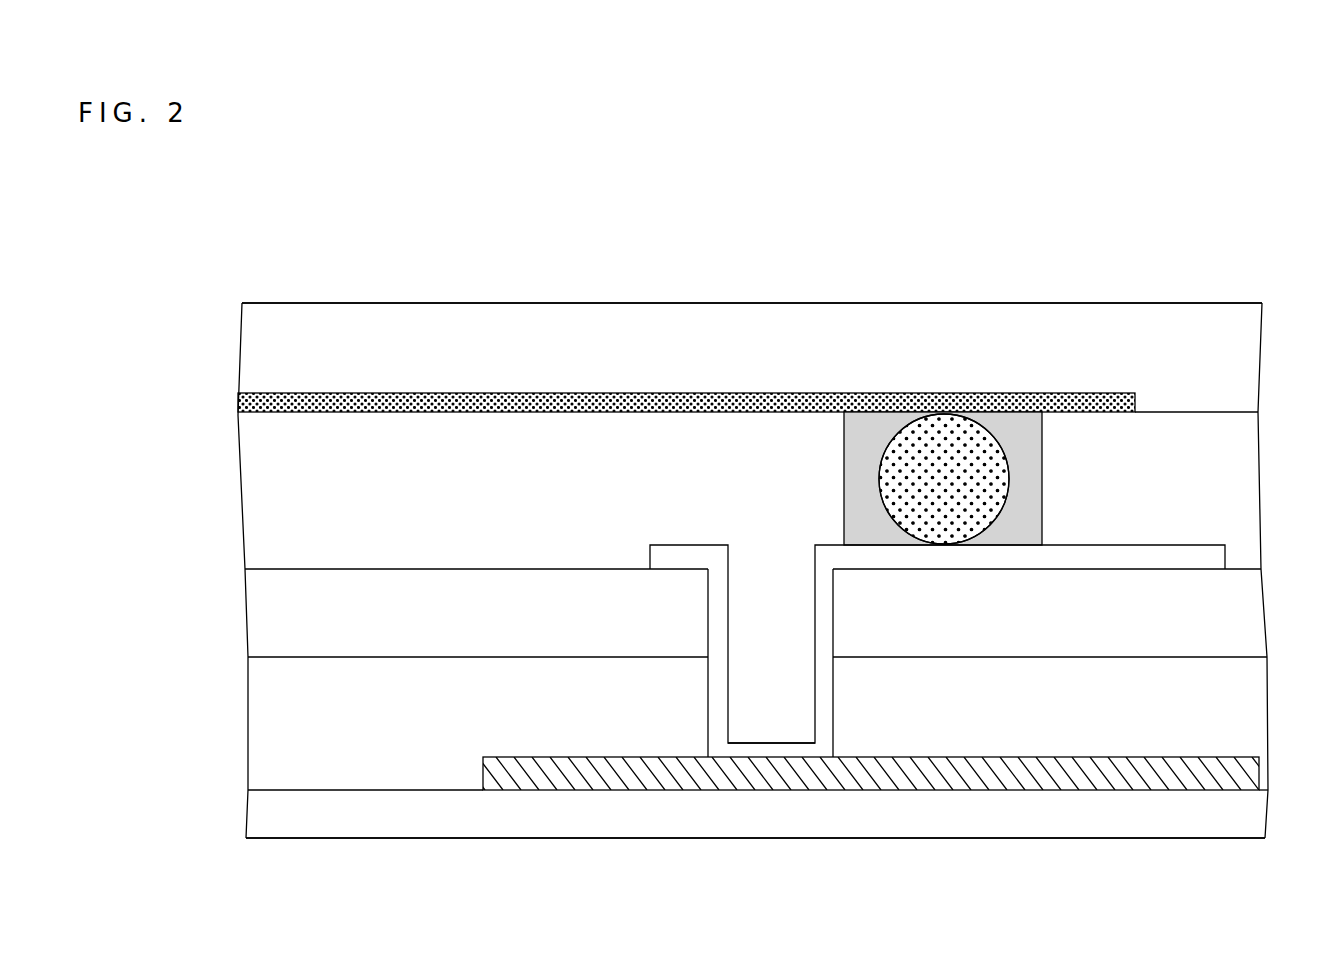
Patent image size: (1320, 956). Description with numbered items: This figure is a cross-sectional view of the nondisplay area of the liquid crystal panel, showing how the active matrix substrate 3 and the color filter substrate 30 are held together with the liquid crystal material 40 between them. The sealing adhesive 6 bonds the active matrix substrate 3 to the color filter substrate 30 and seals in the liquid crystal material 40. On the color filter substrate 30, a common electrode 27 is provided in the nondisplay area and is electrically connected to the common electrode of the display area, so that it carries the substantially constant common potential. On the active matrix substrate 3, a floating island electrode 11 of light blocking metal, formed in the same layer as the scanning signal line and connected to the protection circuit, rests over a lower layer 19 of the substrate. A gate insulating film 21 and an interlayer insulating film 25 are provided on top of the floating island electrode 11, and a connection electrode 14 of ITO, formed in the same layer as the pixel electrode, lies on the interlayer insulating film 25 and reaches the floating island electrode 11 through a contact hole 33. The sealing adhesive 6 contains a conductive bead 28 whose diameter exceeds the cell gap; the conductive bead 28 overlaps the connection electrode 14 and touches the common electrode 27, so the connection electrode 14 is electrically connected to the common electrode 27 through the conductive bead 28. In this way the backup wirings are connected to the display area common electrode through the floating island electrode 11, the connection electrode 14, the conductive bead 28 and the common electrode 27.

The color filter substrate 30 is at (228, 303).
The liquid crystal material 40 is at (228, 415).
The active matrix substrate 3 is at (228, 569).
The common electrode 27 is at (484, 405).
The conductive bead 28 is at (943, 445).
The sealing adhesive 6 is at (1046, 493).
The contact hole 33 is at (762, 550).
The interlayer insulating film 25 is at (1247, 613).
The gate insulating film 21 is at (1248, 714).
The floating island electrode 11 is at (1248, 772).
The substrate 19 is at (1248, 820).
The connection electrode 14 is at (768, 750).